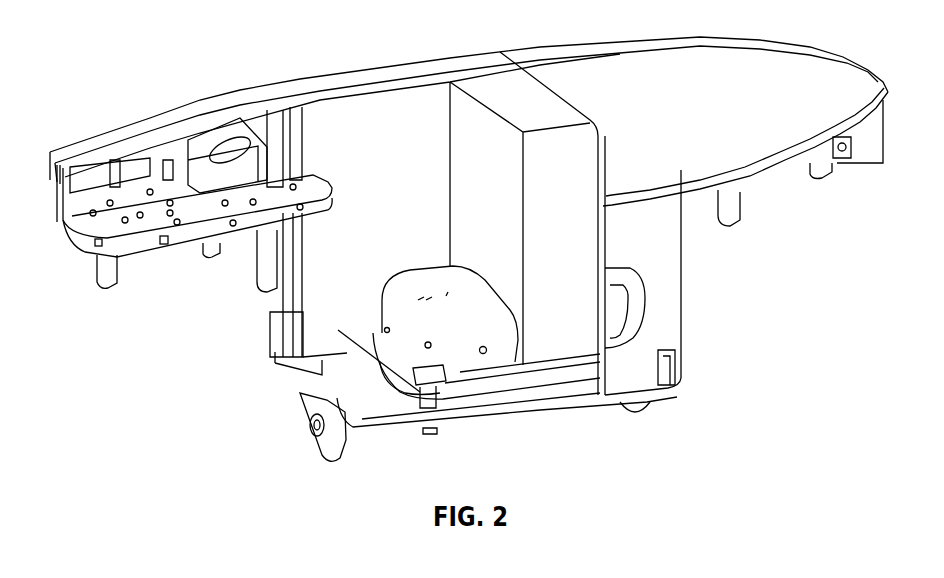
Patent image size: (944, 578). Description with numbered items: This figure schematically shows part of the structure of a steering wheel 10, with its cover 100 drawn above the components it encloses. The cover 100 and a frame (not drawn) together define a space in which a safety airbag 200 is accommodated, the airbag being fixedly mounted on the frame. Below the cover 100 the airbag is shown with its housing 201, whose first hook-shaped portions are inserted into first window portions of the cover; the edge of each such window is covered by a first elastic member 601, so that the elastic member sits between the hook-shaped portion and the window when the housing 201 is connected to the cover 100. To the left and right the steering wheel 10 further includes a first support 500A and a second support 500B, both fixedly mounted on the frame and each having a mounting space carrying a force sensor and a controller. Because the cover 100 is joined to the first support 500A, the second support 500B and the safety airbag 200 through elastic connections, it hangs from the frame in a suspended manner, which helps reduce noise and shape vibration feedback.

The steering wheel 10 is at (469, 199).
The cover 100 is at (658, 287).
The safety airbag 200 is at (468, 312).
The housing of the safety airbag 201 is at (278, 314).
The first elastic member 601 is at (277, 320).
The first support 500A is at (83, 235).
The second support 500B is at (847, 158).